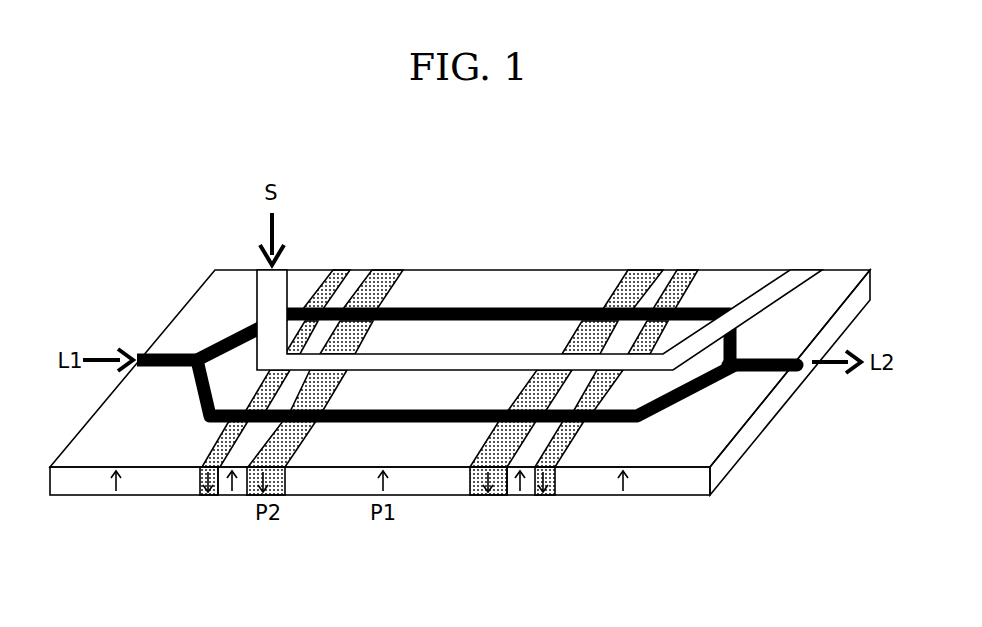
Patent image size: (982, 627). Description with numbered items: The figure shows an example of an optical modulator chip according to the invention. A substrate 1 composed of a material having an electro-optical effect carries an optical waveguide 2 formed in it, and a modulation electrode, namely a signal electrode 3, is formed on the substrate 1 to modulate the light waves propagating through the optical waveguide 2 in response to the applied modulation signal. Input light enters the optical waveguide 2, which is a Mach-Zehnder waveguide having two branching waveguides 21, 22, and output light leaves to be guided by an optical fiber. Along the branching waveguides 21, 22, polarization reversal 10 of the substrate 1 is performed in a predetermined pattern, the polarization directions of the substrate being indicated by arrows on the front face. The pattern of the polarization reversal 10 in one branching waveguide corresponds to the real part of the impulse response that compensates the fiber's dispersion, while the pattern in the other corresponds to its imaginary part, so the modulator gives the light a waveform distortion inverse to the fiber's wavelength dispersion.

The substrate 1 is at (182, 452).
The optical waveguide 2 is at (467, 387).
The signal electrode 3 is at (275, 333).
The polarization reversal pattern 10 is at (449, 322).
The branching waveguide 21 is at (545, 307).
The branching waveguide 22 is at (420, 423).